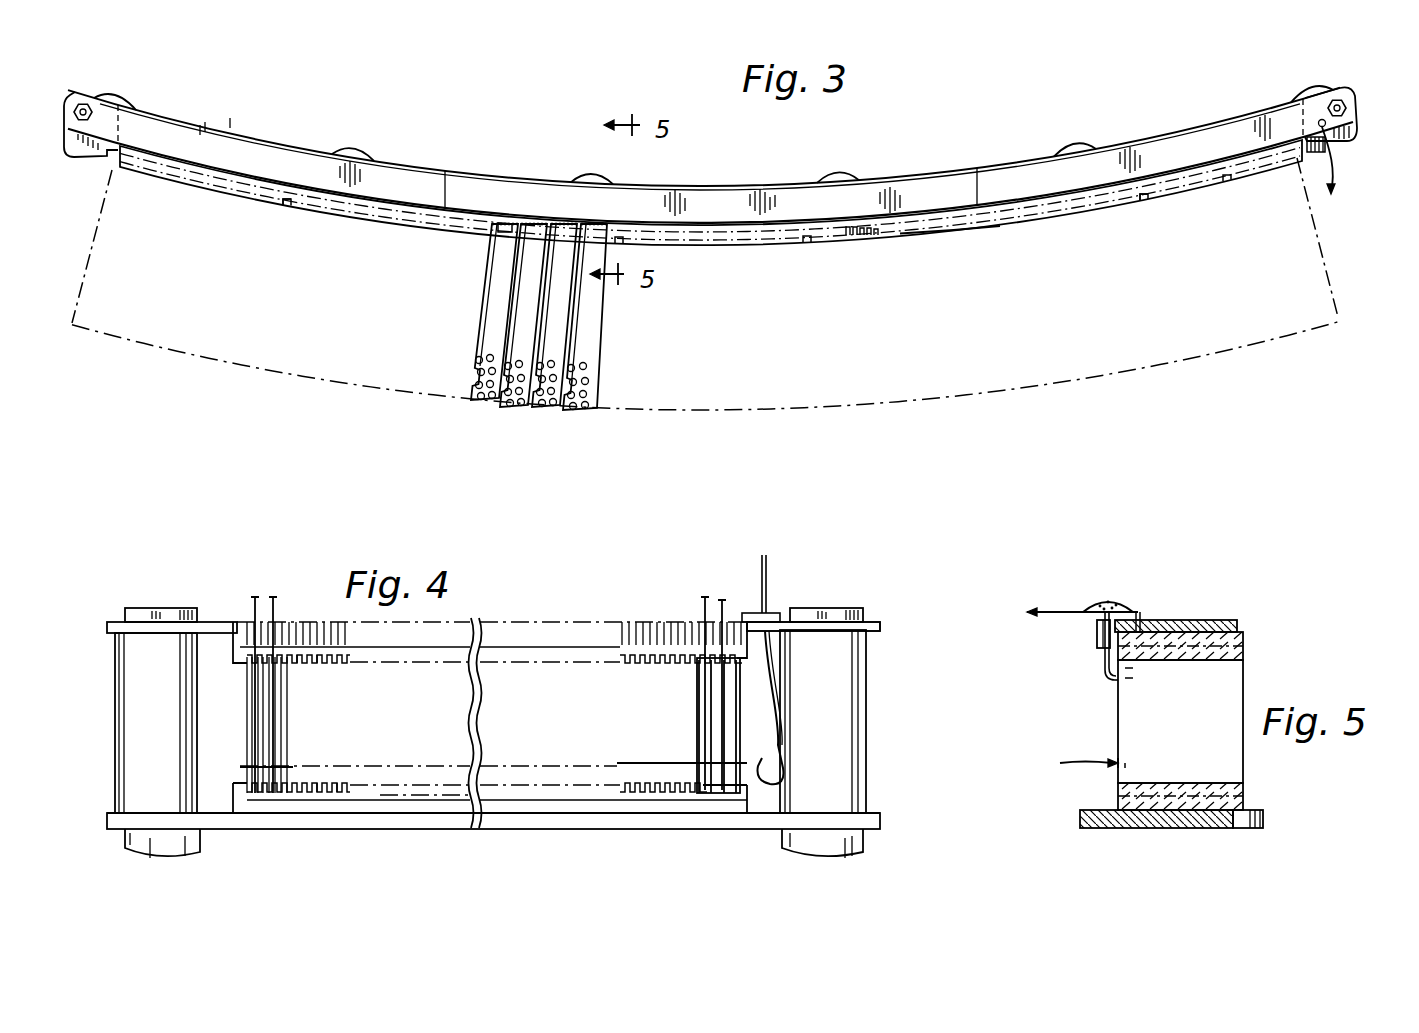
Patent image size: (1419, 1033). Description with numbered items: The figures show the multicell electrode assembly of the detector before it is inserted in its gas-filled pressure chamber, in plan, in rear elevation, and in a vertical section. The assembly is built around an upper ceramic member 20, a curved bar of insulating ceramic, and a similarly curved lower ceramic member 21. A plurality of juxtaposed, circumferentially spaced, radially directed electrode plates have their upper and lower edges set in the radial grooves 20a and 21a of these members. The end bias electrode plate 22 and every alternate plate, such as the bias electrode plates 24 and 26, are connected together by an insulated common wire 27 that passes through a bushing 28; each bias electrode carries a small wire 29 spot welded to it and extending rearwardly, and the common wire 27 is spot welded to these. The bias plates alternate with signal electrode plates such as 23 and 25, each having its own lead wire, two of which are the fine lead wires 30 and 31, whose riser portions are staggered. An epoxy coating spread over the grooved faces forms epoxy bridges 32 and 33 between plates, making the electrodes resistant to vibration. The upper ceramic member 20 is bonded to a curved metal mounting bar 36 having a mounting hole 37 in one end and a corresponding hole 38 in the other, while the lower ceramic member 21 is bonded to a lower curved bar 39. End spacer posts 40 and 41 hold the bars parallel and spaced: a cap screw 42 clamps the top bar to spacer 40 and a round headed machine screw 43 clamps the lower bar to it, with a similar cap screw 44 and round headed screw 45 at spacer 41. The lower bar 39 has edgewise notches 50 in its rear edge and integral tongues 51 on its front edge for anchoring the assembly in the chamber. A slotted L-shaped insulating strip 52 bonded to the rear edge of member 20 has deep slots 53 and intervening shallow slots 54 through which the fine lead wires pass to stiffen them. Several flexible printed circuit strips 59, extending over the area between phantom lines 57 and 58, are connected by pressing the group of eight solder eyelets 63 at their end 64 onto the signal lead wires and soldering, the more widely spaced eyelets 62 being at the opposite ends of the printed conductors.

In FIG. 3, the upper ceramic member 20 is at (700, 190).
In FIG. 4, the upper ceramic member 20 is at (620, 658).
In FIG. 5, the upper ceramic member 20 is at (1245, 639).
In FIG. 4, the radial grooves 20a is at (319, 665).
In FIG. 4, the lower ceramic member 21 is at (672, 793).
In FIG. 5, the lower ceramic member 21 is at (1244, 801).
In FIG. 4, the radial grooves 21a is at (322, 782).
In FIG. 4, the end bias electrode plate 22 is at (742, 719).
In FIG. 4, the signal electrode plate 23 is at (741, 681).
In FIG. 4, the bias electrode plate 24 is at (717, 736).
In FIG. 4, the signal electrode plate 25 is at (712, 681).
In FIG. 4, the bias electrode plate 26 is at (700, 704).
In FIG. 5, the bias electrode plate 26 is at (1205, 743).
In FIG. 3, the common wire 27 is at (1334, 171).
In FIG. 4, the common wire 27 is at (761, 766).
In FIG. 5, the common wire 27 is at (1083, 765).
In FIG. 4, the bushing 28 is at (773, 612).
In FIG. 5, the small wire 29 is at (1121, 760).
In FIG. 4, the lead wire 30 is at (704, 606).
In FIG. 5, the lead wire 30 is at (1104, 663).
In FIG. 4, the lead wire 31 is at (743, 582).
In FIG. 5, the lead wire 31 is at (1106, 681).
In FIG. 4, the epoxy bridge 32 is at (291, 778).
In FIG. 4, the epoxy bridge 33 is at (288, 669).
In FIG. 3, the curved metal mounting bar 36 is at (898, 197).
In FIG. 4, the curved metal mounting bar 36 is at (864, 622).
In FIG. 5, the curved metal mounting bar 36 is at (1213, 609).
In FIG. 3, the mounting hole 37 is at (88, 99).
In FIG. 3, the mounting hole 38 is at (1340, 100).
In FIG. 3, the lower curved bar 39 is at (951, 229).
In FIG. 4, the lower curved bar 39 is at (872, 818).
In FIG. 5, the lower curved bar 39 is at (1161, 830).
In FIG. 4, the end spacer post 40 is at (123, 699).
In FIG. 4, the end spacer post 41 is at (848, 683).
In FIG. 4, the cap screw 42 is at (160, 608).
In FIG. 4, the round headed machine screw 43 is at (126, 843).
In FIG. 4, the cap screw 44 is at (834, 608).
In FIG. 4, the round headed screw 45 is at (864, 836).
In FIG. 3, the edgewise notch 50 is at (283, 206).
In FIG. 3, the integral tongue 51 is at (1075, 147).
In FIG. 5, the integral tongue 51 is at (1265, 821).
In FIG. 3, the slotted strip 52 is at (751, 234).
In FIG. 5, the slotted strip 52 is at (1141, 619).
In FIG. 3, the deep slot 53 is at (879, 236).
In FIG. 3, the shallow slot 54 is at (848, 234).
In FIG. 4, the shallow slot 54 is at (696, 614).
In FIG. 5, the shallow slot 54 is at (1097, 638).
In FIG. 3, the phantom line 57 is at (96, 224).
In FIG. 3, the phantom line 58 is at (1321, 262).
In FIG. 3, the flexible printed circuit strip 59 is at (607, 328).
In FIG. 3, the solder eyelet 62 is at (471, 372).
In FIG. 3, the solder eyelet 63 is at (506, 231).
In FIG. 3, the strip end 64 is at (528, 404).